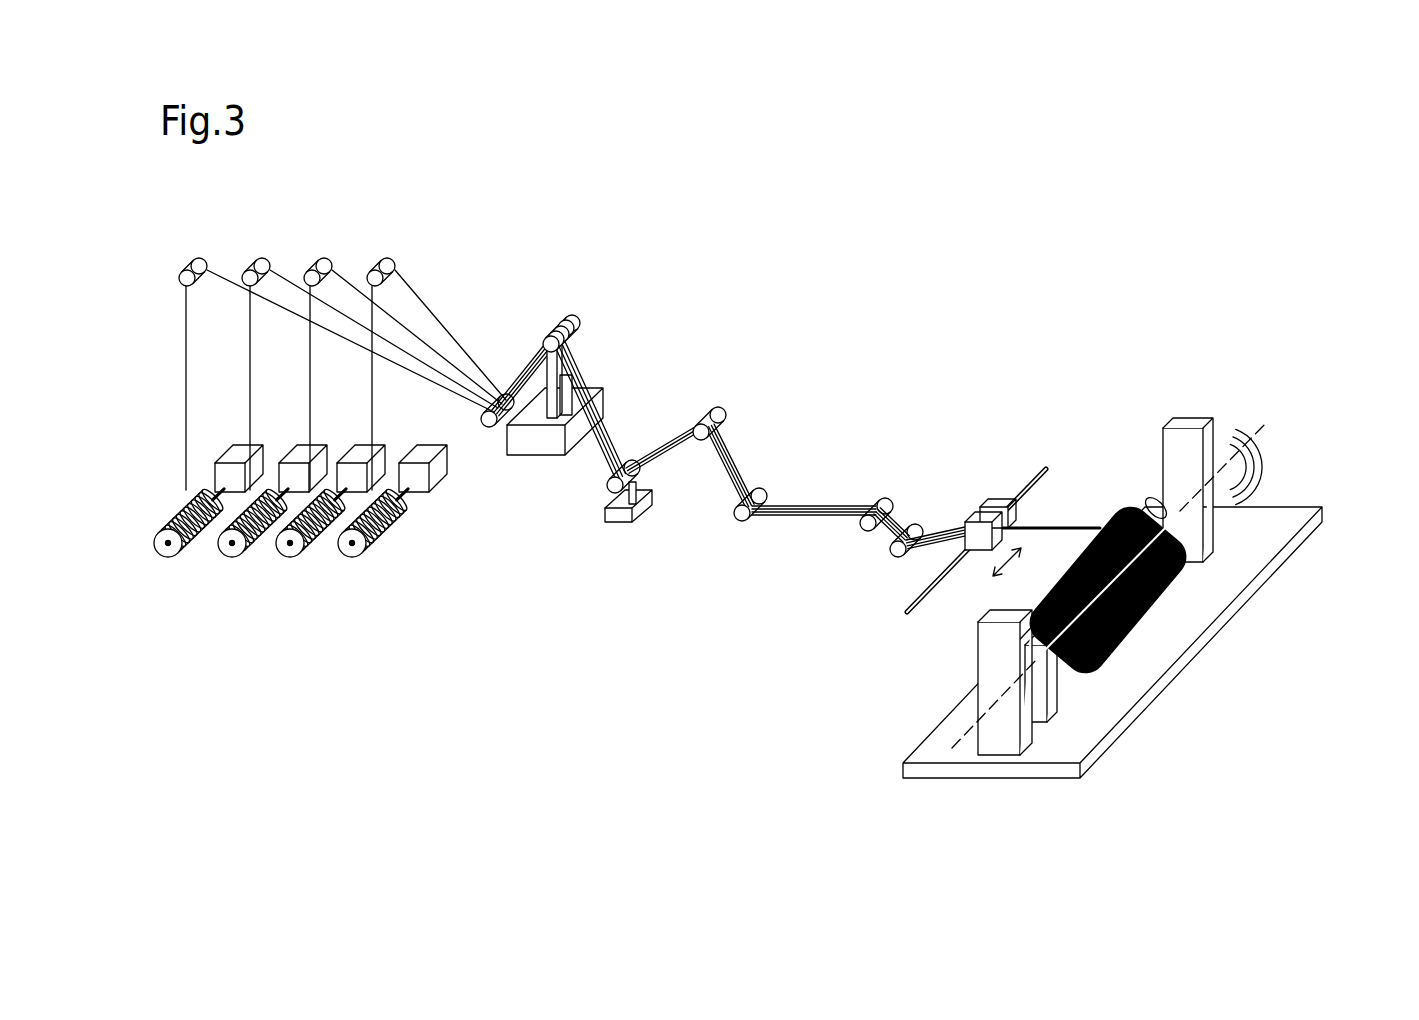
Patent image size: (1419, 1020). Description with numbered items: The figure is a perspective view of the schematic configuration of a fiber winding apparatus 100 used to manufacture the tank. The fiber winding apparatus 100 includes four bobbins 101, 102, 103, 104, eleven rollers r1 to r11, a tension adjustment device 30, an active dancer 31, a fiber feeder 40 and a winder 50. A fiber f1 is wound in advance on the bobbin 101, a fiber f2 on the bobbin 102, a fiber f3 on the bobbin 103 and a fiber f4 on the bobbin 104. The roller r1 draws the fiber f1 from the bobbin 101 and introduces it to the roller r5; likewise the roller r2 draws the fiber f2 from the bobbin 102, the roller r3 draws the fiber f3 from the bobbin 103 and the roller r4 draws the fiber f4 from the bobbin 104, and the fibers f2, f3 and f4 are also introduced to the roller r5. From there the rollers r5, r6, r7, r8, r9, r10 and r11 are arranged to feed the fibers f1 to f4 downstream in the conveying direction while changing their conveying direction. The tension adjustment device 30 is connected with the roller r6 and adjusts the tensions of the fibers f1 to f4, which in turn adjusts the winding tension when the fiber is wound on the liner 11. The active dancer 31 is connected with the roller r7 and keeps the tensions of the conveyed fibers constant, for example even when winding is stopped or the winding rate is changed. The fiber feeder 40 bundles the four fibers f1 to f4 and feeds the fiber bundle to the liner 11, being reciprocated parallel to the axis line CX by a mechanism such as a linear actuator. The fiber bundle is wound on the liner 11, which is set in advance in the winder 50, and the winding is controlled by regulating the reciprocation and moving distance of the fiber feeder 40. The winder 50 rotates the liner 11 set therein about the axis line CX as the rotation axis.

The fiber winding apparatus 100 is at (1226, 241).
The bobbin 101 is at (171, 558).
The bobbin 102 is at (237, 558).
The bobbin 103 is at (293, 558).
The bobbin 104 is at (355, 558).
The fiber f1 is at (462, 345).
The fiber f2 is at (456, 366).
The fiber f3 is at (436, 370).
The fiber f4 is at (410, 371).
The roller r1 is at (197, 262).
The roller r2 is at (259, 262).
The roller r3 is at (321, 262).
The roller r4 is at (383, 262).
The roller r5 is at (491, 428).
The roller r6 is at (571, 318).
The roller r7 is at (633, 460).
The roller r8 is at (719, 405).
The roller r9 is at (759, 487).
The roller r10 is at (883, 498).
The roller r11 is at (917, 523).
The tension adjustment device 30 is at (550, 457).
The active dancer 31 is at (621, 524).
The fiber feeder 40 is at (984, 506).
The liner 11 is at (1120, 503).
The winder 50 is at (1146, 588).
The axis line CX is at (1130, 573).